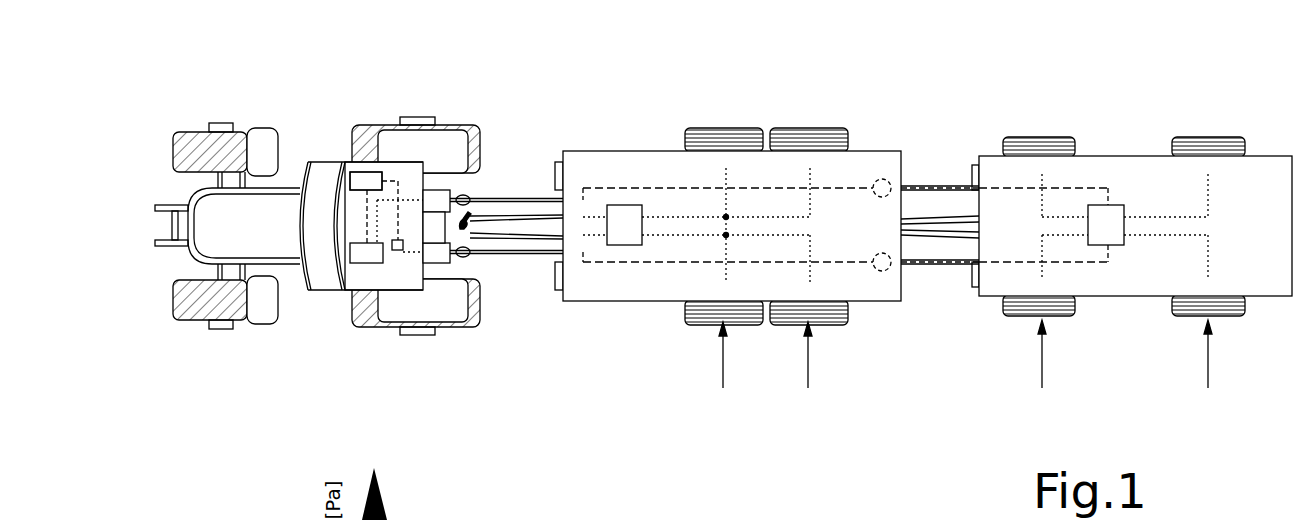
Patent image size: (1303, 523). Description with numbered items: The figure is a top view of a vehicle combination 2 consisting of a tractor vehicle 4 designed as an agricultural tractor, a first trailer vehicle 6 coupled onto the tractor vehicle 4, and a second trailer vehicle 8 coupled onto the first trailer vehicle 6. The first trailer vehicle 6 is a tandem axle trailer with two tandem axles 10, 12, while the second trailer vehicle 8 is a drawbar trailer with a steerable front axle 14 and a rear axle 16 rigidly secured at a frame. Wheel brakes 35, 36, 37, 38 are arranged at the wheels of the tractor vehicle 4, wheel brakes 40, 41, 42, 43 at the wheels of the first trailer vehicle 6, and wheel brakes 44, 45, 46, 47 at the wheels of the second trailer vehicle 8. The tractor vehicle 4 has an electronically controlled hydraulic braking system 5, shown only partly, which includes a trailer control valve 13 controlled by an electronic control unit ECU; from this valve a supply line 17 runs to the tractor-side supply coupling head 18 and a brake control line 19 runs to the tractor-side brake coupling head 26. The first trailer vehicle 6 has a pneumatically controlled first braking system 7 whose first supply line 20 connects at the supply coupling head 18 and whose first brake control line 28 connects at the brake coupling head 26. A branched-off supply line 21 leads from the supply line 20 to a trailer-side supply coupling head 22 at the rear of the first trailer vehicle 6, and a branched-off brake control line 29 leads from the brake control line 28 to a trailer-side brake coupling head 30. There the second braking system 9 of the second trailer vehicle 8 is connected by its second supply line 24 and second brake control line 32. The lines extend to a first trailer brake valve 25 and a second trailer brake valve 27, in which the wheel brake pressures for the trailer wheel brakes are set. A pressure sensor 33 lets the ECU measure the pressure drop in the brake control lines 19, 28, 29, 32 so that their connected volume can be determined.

The vehicle combination 2 is at (172, 348).
The tractor vehicle 4 is at (248, 238).
The braking system 5 is at (343, 255).
The first trailer vehicle 6 is at (838, 236).
The first braking system 7 is at (537, 170).
The second trailer vehicle 8 is at (1238, 243).
The second braking system 9 is at (957, 172).
The tandem axle 10 is at (723, 370).
The tandem axle 12 is at (808, 370).
The trailer control valve 13 is at (365, 264).
The front axle 14 is at (1042, 369).
The rear axle 16 is at (1208, 369).
The supply line 17 is at (392, 172).
The electronic control unit ECU is at (332, 180).
The supply coupling head 18 is at (461, 193).
The brake control line 19 is at (410, 254).
The first supply line 20 is at (518, 192).
The branched-off supply line 21 is at (659, 188).
The supply coupling head 22 is at (881, 168).
The second supply line 24 is at (940, 178).
The first trailer brake valve 25 is at (618, 205).
The brake coupling head 26 is at (461, 259).
The second trailer brake valve 27 is at (1117, 203).
The first brake control line 28 is at (526, 259).
The branched-off brake control line 29 is at (618, 263).
The brake coupling head 30 is at (881, 284).
The second brake control line 32 is at (942, 270).
The pressure sensor 33 is at (397, 251).
The wheel brake 35 is at (219, 330).
The wheel brake 36 is at (222, 122).
The wheel brake 37 is at (412, 335).
The wheel brake 38 is at (417, 117).
The wheel brake 40 is at (705, 290).
The wheel brake 41 is at (724, 150).
The wheel brake 42 is at (790, 290).
The wheel brake 43 is at (810, 150).
The wheel brake 44 is at (1060, 285).
The wheel brake 45 is at (1060, 168).
The wheel brake 46 is at (1228, 285).
The wheel brake 47 is at (1228, 168).